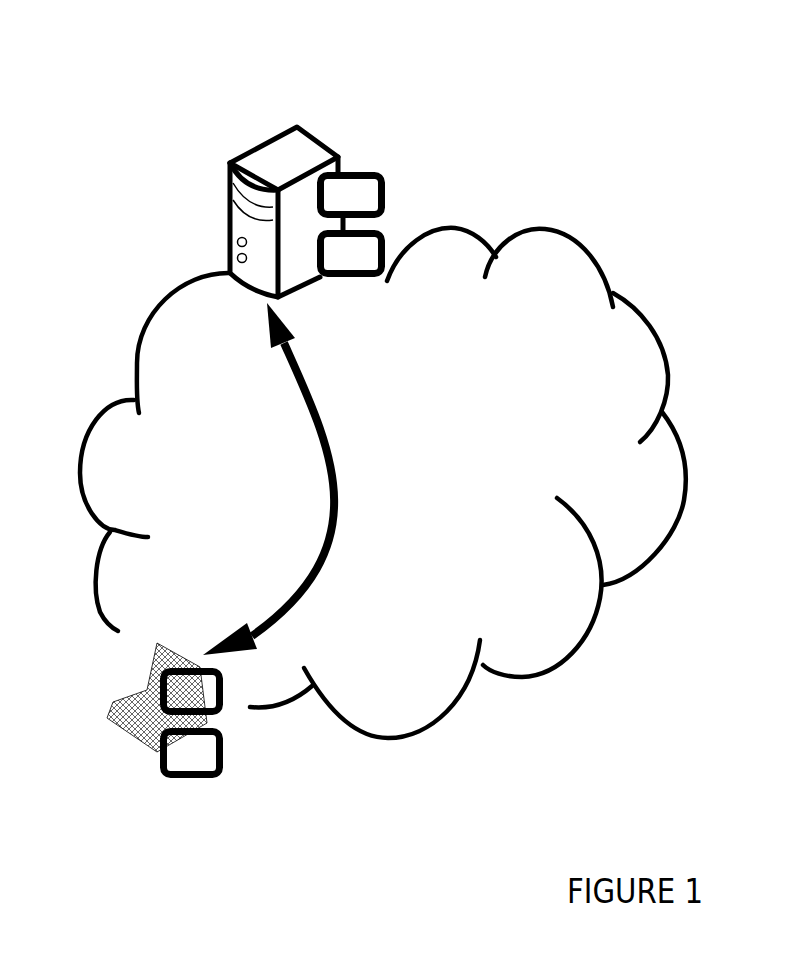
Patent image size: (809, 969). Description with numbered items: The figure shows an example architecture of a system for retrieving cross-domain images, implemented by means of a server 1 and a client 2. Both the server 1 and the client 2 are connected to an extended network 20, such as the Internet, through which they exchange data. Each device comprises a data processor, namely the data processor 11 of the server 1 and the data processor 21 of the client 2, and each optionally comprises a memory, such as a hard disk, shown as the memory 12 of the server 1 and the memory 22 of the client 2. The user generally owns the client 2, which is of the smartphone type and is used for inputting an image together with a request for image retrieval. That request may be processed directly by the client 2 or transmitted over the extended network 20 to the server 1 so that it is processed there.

The server 1 is at (295, 125).
The data processor 11 is at (388, 266).
The memory 12 is at (388, 183).
The extended network 20 is at (662, 335).
The client 2 is at (112, 707).
The data processor 21 is at (232, 778).
The memory 22 is at (230, 688).